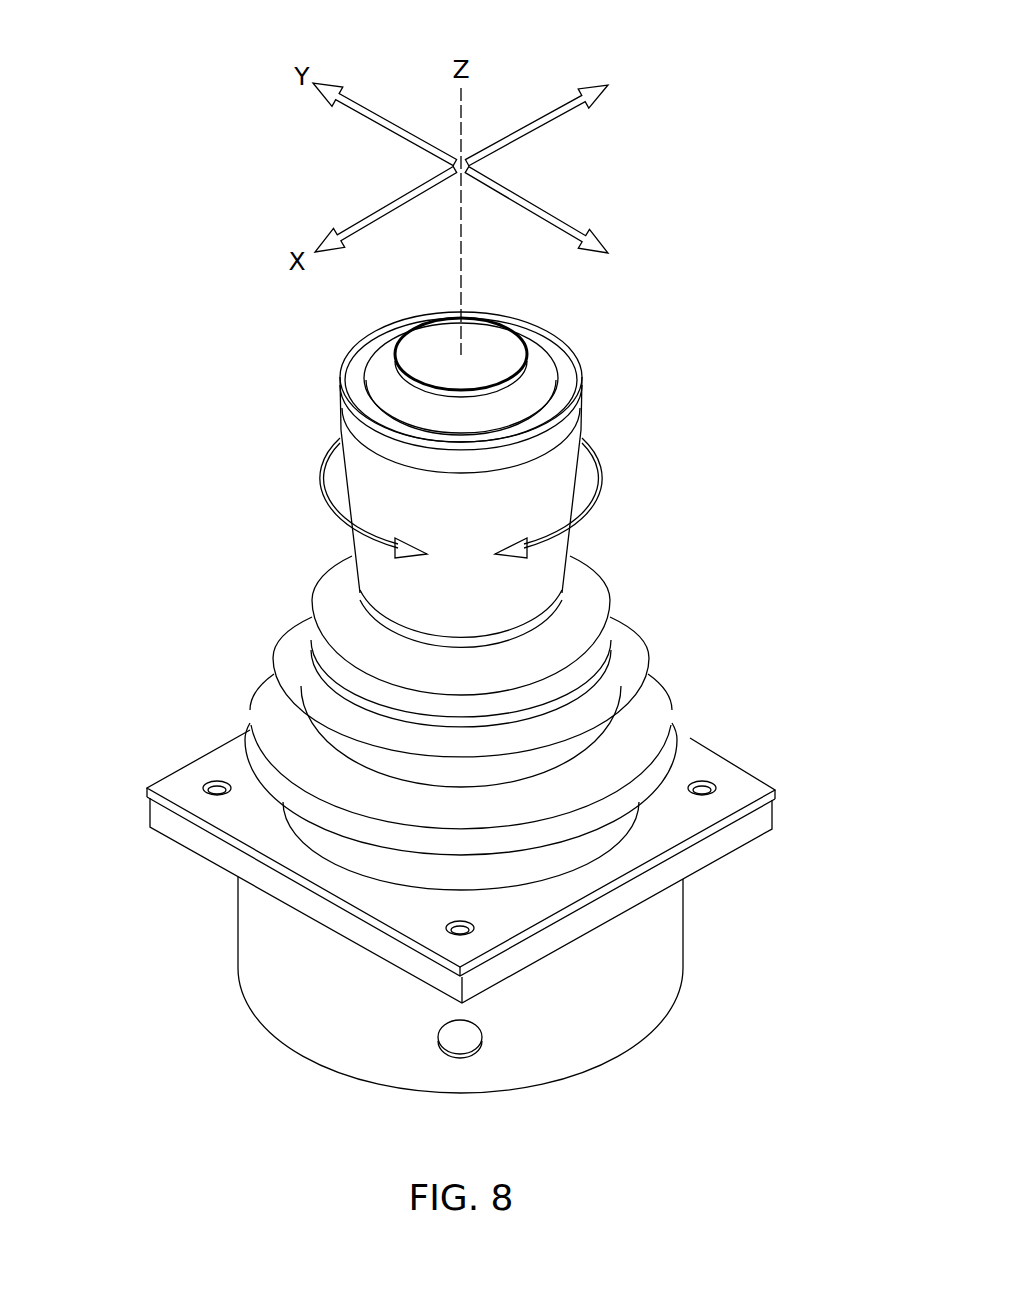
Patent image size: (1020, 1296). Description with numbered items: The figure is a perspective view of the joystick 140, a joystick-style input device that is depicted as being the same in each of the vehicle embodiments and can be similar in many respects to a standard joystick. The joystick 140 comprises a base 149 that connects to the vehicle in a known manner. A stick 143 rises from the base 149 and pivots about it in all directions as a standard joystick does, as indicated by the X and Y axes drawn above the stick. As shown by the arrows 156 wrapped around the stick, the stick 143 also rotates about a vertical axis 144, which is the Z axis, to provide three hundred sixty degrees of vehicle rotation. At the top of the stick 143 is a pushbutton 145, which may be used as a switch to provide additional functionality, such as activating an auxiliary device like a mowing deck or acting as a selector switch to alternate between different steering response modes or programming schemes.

The joystick 140 is at (148, 462).
The stick 143 is at (483, 525).
The vertical axis 144 is at (462, 257).
The pushbutton 145 is at (450, 363).
The base 149 is at (702, 752).
The arrows 156 is at (600, 474).